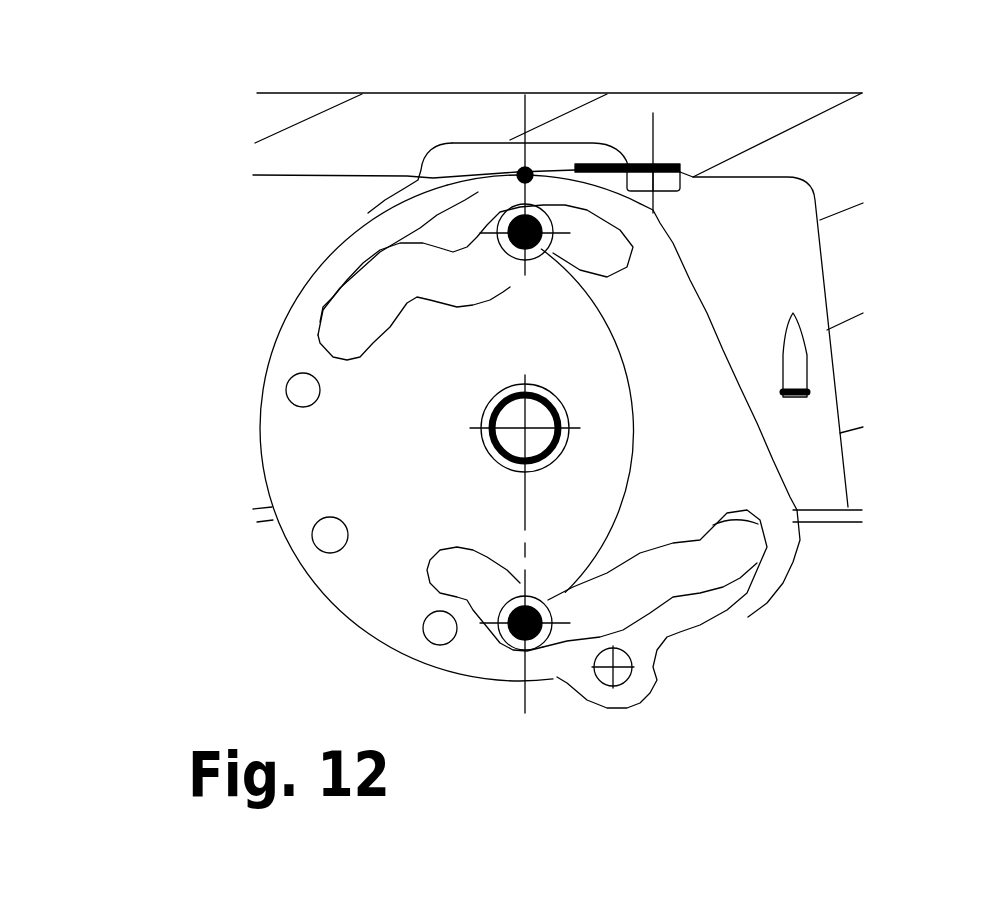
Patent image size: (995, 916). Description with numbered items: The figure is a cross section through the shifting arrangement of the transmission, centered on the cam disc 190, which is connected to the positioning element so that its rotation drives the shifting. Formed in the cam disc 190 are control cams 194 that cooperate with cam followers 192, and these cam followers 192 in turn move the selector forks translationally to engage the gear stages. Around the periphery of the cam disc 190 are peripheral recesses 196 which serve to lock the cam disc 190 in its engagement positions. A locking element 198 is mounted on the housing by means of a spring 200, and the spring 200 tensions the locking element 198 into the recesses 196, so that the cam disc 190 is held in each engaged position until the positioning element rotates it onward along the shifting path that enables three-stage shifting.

The cam disc 190 is at (327, 458).
The cam followers 192 is at (562, 544).
The control cams 194 is at (362, 323).
The peripheral recesses 196 is at (437, 188).
The locking element 198 is at (522, 173).
The spring 200 is at (580, 161).